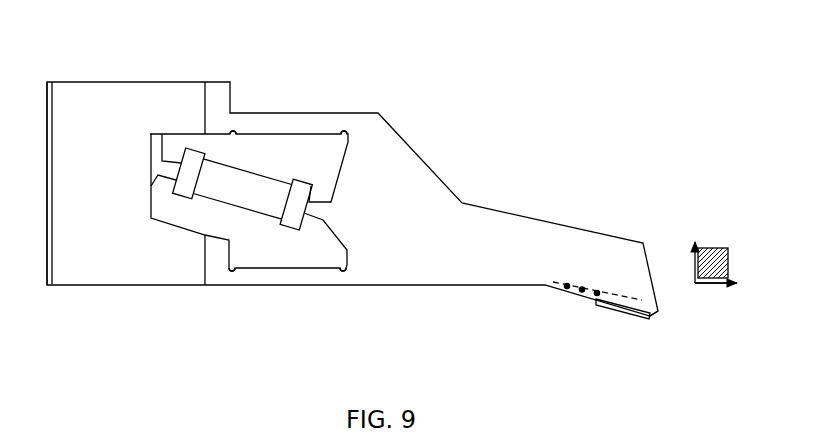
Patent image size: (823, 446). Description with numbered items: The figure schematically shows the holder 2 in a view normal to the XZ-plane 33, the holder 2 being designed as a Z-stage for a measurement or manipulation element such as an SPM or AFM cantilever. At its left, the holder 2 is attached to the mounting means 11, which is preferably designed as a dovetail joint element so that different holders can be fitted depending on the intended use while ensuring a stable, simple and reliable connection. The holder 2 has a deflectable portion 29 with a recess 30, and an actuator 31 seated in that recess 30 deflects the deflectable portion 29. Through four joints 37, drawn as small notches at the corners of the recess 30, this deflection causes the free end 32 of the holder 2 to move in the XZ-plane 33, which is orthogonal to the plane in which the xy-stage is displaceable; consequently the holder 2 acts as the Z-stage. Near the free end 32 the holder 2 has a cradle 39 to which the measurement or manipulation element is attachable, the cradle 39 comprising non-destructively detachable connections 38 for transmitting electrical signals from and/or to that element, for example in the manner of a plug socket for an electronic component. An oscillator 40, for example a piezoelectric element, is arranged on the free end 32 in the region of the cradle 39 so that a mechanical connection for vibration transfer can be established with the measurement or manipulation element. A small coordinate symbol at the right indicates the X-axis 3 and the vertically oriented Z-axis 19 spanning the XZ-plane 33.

The holder 2 is at (519, 77).
The mounting means 11 is at (46, 234).
The deflectable portion 29 is at (393, 233).
The recess 30 is at (260, 249).
The actuator 31 is at (240, 188).
The joints 37 is at (236, 128).
The non-destructively detachable connections 38 is at (595, 295).
The cradle 39 is at (600, 281).
The oscillator 40 is at (625, 307).
The free end 32 is at (655, 322).
The Z-axis 19 is at (694, 249).
The XZ-plane 33 is at (716, 249).
The X-axis 3 is at (718, 281).